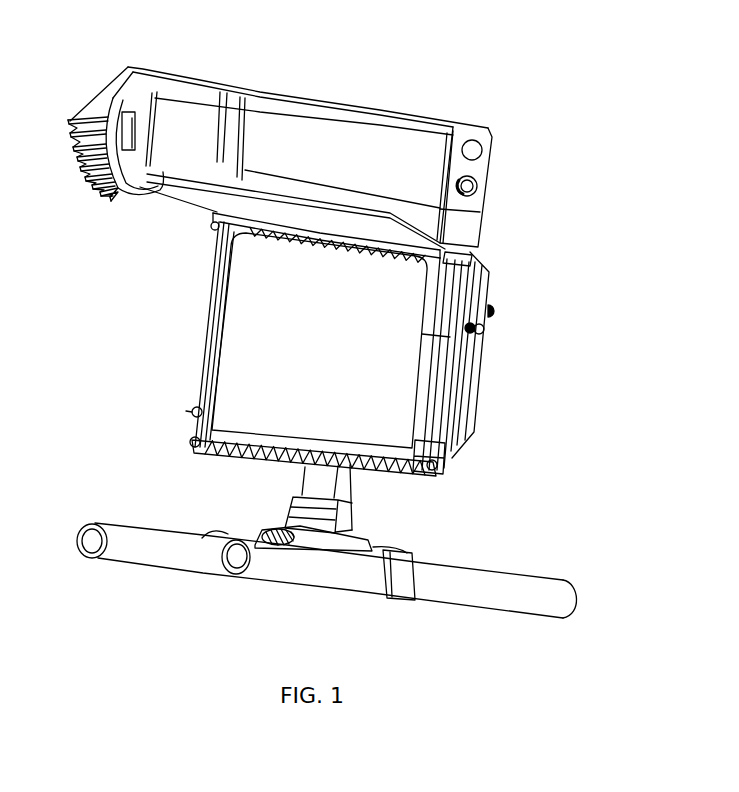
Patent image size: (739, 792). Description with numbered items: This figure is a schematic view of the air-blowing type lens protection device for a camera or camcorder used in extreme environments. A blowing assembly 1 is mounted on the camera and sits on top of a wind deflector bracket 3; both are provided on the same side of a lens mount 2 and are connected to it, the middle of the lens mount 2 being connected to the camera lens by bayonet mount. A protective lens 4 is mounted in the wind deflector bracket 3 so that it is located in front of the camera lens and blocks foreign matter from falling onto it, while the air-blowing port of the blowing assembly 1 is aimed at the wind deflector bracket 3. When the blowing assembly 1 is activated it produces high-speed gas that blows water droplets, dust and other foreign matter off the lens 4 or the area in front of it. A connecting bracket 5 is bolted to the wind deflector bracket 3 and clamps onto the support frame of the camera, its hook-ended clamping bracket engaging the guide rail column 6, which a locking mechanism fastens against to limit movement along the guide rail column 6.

The blowing assembly 1 is at (291, 153).
The lens mount 2 is at (482, 358).
The wind deflector bracket 3 is at (200, 396).
The lens 4 is at (266, 326).
The connecting bracket 5 is at (290, 521).
The guide rail column 6 is at (183, 552).